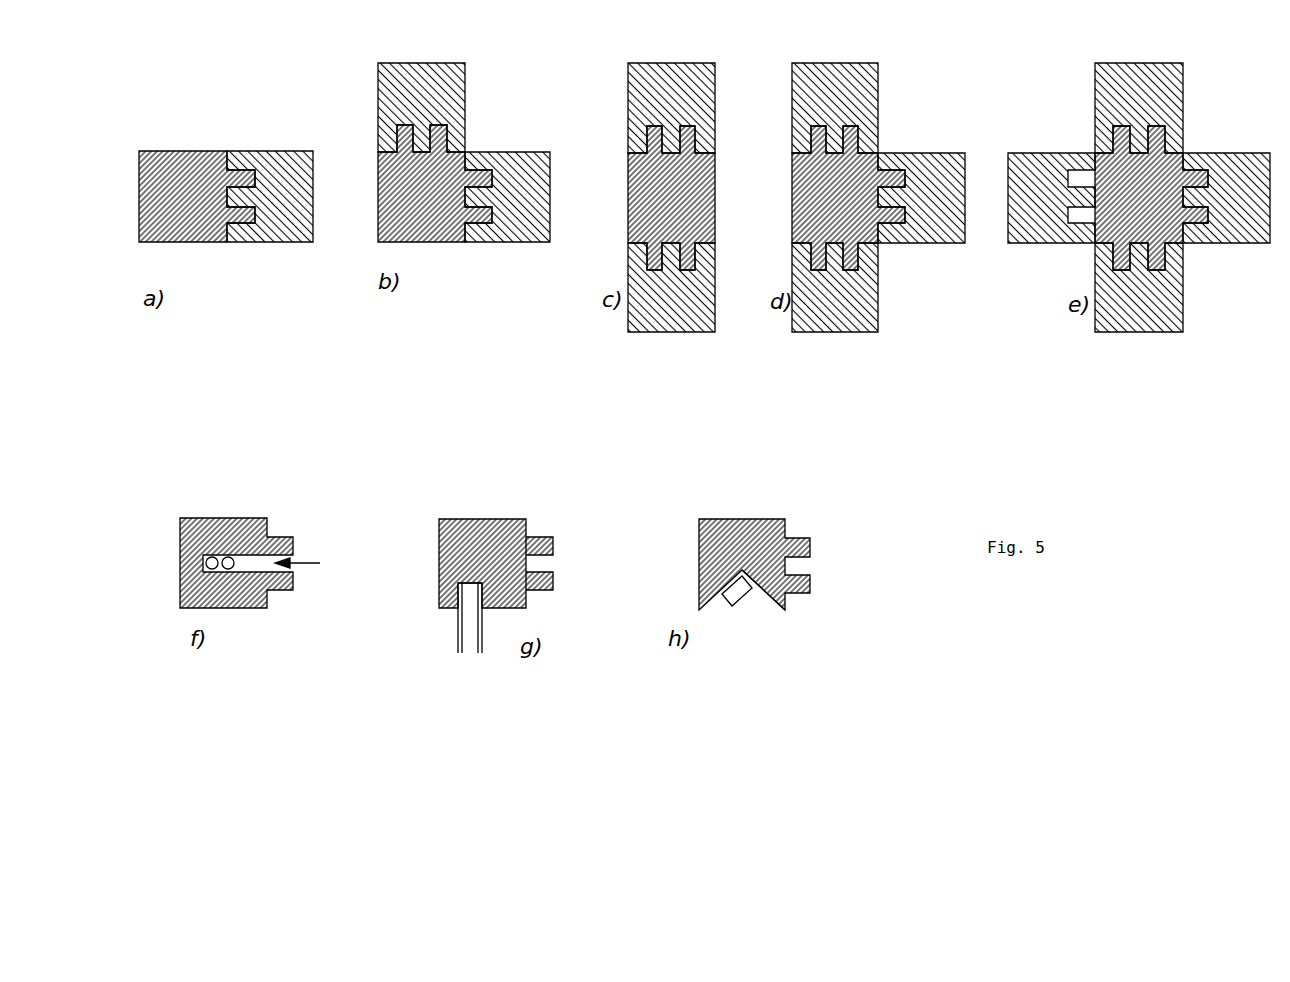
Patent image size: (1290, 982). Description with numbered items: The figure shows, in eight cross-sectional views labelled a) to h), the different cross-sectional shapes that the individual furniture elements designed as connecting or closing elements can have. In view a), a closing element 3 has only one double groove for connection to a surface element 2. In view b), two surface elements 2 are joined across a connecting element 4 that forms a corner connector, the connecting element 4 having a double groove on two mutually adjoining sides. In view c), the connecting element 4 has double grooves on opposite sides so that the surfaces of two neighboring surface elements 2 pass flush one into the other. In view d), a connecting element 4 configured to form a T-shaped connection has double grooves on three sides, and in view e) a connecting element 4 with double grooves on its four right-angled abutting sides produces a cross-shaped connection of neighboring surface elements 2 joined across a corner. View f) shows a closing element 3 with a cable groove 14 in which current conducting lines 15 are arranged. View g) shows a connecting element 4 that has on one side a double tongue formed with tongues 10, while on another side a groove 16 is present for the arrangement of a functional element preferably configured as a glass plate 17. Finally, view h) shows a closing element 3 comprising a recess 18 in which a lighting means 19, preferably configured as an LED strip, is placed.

The surface element 2 is at (283, 178).
The closing element 3 is at (199, 172).
The connecting element 4 is at (435, 227).
The tongues 10 is at (540, 548).
The cable groove 14 is at (318, 566).
The current conducting lines 15 is at (208, 565).
The groove 16 is at (455, 577).
The glass plate 17 is at (466, 622).
The recess 18 is at (776, 620).
The lighting means 19 is at (735, 600).